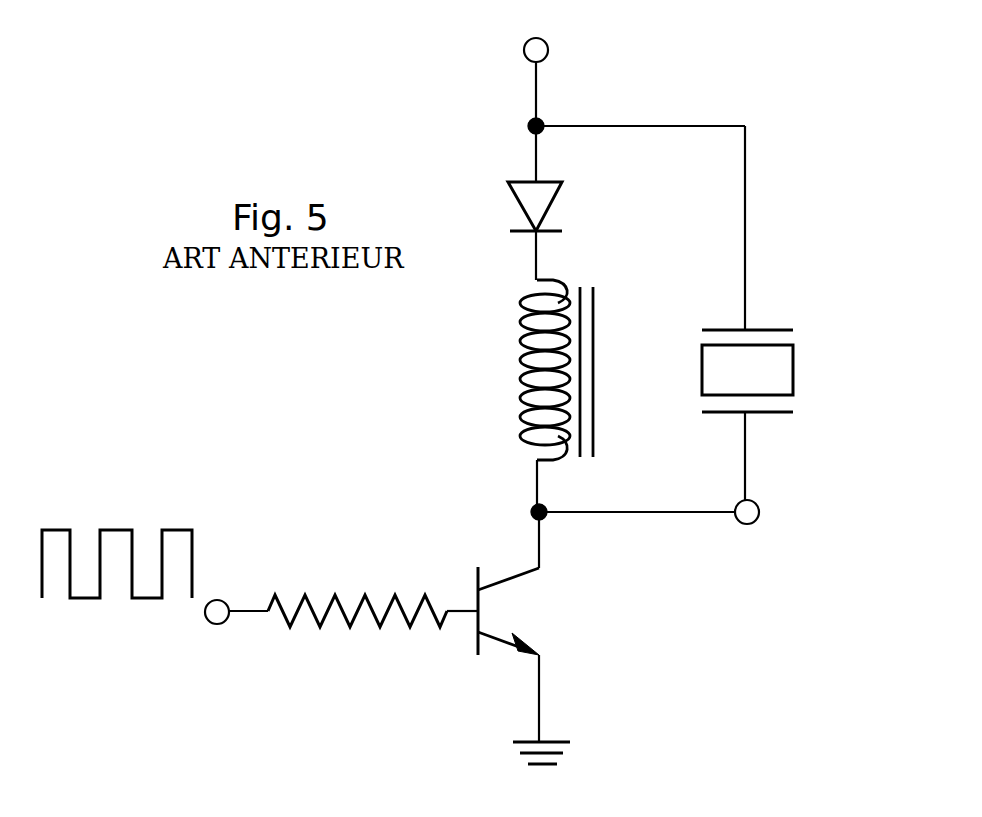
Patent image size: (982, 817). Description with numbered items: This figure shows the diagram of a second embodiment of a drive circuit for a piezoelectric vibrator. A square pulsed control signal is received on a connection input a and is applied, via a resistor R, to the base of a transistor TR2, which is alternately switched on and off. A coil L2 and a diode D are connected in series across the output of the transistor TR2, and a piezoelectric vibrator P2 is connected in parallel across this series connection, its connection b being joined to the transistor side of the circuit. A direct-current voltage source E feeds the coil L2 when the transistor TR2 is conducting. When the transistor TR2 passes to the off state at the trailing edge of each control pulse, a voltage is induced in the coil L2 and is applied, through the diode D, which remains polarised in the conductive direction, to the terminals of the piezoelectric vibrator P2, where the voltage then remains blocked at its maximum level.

The direct-current voltage source E is at (630, 92).
The diode D is at (540, 200).
The coil L2 is at (520, 360).
The piezoelectric vibrator P2 is at (765, 330).
The connection b is at (759, 516).
The transistor TR2 is at (472, 643).
The resistor R is at (365, 595).
The connection input a is at (215, 600).